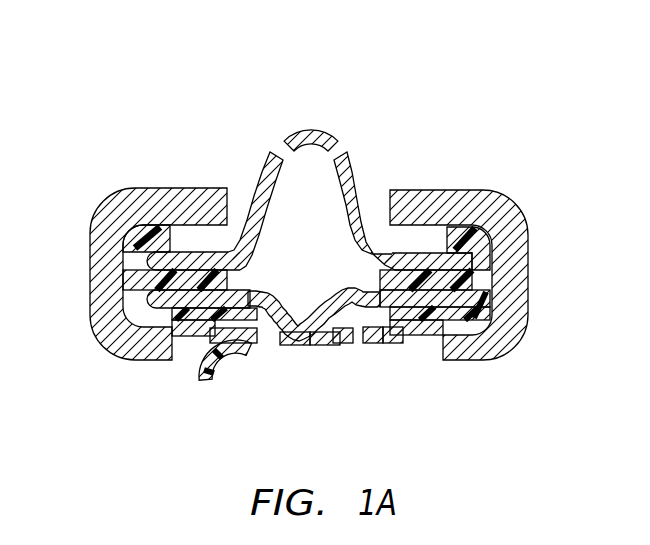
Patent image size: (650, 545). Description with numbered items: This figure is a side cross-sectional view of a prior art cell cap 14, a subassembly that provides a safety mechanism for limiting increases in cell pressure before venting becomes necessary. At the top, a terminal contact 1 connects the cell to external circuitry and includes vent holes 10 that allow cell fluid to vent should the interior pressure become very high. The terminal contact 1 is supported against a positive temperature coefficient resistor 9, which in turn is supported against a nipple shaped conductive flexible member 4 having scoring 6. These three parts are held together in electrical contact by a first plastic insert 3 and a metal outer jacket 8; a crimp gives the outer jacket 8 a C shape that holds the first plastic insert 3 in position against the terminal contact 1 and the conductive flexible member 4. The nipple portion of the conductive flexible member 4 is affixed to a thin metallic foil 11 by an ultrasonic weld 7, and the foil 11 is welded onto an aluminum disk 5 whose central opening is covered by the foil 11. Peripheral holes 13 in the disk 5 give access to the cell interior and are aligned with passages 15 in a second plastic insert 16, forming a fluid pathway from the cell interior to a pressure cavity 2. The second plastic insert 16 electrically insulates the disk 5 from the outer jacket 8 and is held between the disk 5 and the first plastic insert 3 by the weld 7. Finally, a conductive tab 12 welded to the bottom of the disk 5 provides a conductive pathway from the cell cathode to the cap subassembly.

The terminal contact 1 is at (321, 130).
The pressure cavity 2 is at (373, 338).
The first plastic insert 3 is at (125, 348).
The conductive flexible member 4 is at (318, 313).
The aluminum disk 5 is at (368, 343).
The scoring 6 is at (357, 290).
The ultrasonic weld 7 is at (307, 347).
The metal outer jacket 8 is at (183, 202).
The positive temperature coefficient resistor 9 is at (160, 288).
The vent holes 10 is at (283, 162).
The metallic foil 11 is at (293, 347).
The conductive tab 12 is at (206, 382).
The peripheral holes 13 is at (358, 343).
The cell cap 14 is at (308, 102).
The passages 15 is at (260, 344).
The second plastic insert 16 is at (195, 337).